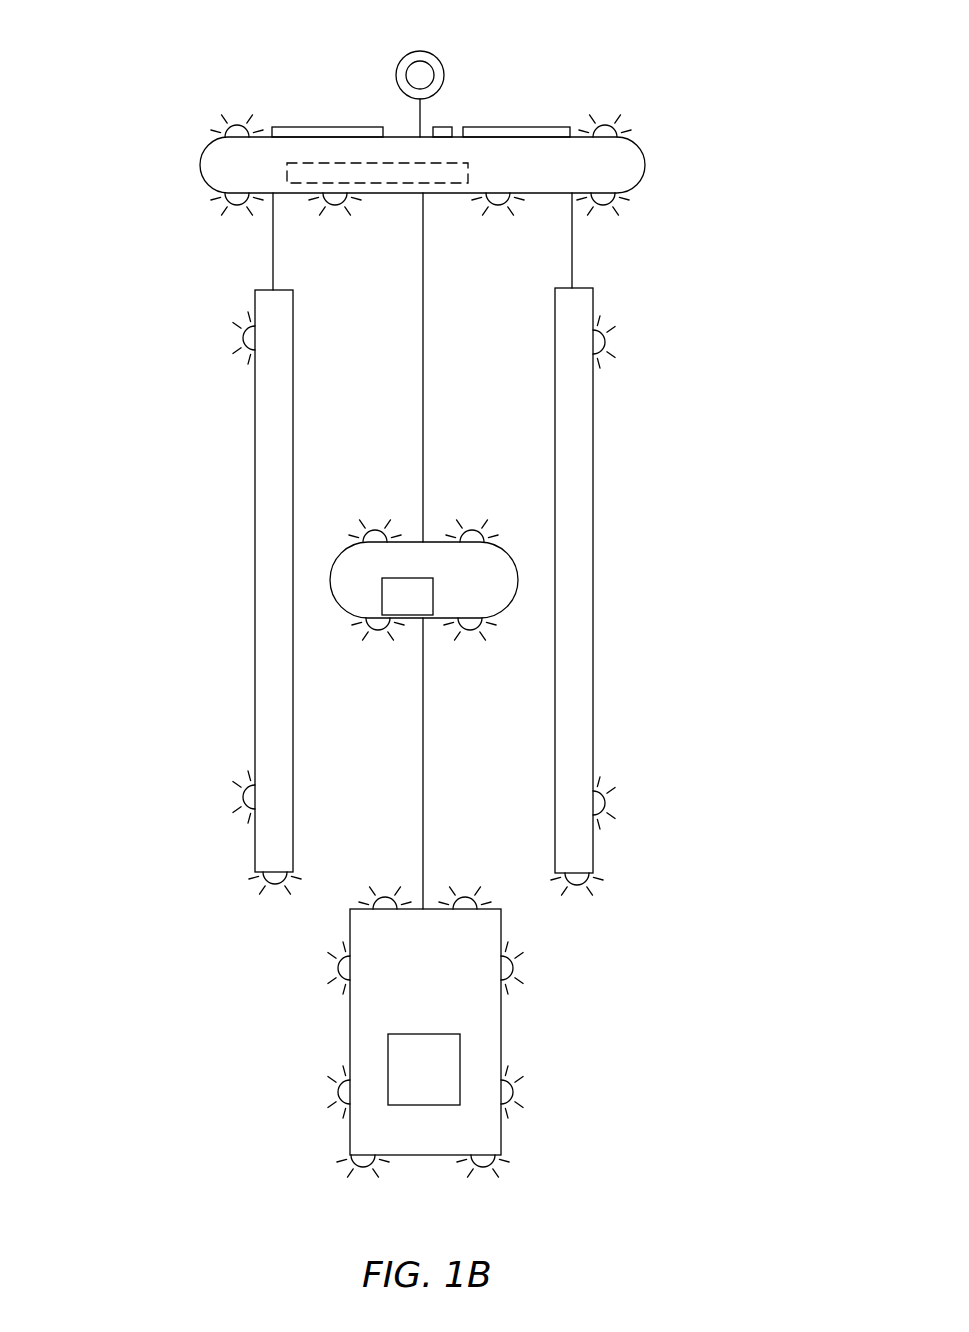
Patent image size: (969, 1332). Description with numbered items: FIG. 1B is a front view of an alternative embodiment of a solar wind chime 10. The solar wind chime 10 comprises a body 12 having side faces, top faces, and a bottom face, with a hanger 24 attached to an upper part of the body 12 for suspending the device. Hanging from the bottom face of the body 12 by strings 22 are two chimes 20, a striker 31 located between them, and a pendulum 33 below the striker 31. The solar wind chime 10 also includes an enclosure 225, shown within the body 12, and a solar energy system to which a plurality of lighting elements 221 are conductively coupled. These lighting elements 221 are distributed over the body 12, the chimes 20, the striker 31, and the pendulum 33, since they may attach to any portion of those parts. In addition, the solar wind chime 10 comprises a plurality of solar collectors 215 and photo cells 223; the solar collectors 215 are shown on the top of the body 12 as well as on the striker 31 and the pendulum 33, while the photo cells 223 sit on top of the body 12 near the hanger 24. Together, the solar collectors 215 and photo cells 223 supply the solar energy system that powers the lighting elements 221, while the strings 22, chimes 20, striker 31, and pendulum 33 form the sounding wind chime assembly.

The solar wind chime 10 is at (112, 86).
The body 12 is at (645, 167).
The chimes 20 is at (293, 438).
The strings 22 is at (273, 275).
The hanger 24 is at (443, 67).
The striker 31 is at (433, 542).
The pendulum 33 is at (501, 1032).
The solar collectors 215 is at (327, 127).
The lighting elements 221 is at (241, 122).
The photo cells 223 is at (443, 127).
The enclosure 225 is at (468, 173).